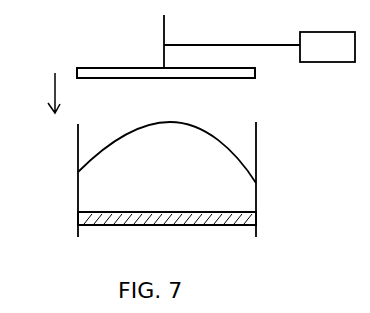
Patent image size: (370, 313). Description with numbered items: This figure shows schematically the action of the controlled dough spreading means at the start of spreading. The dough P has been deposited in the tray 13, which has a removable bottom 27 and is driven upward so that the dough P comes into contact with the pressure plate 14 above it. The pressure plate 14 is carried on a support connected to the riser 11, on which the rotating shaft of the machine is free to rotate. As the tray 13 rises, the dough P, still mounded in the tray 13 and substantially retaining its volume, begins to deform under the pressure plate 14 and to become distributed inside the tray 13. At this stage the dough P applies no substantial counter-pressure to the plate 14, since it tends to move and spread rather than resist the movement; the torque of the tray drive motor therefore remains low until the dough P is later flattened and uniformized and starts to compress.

The pressure plate 14 is at (102, 70).
The riser 11 is at (259, 41).
The tray 13 is at (257, 143).
The dough P is at (222, 193).
The removable bottom 27 is at (128, 236).